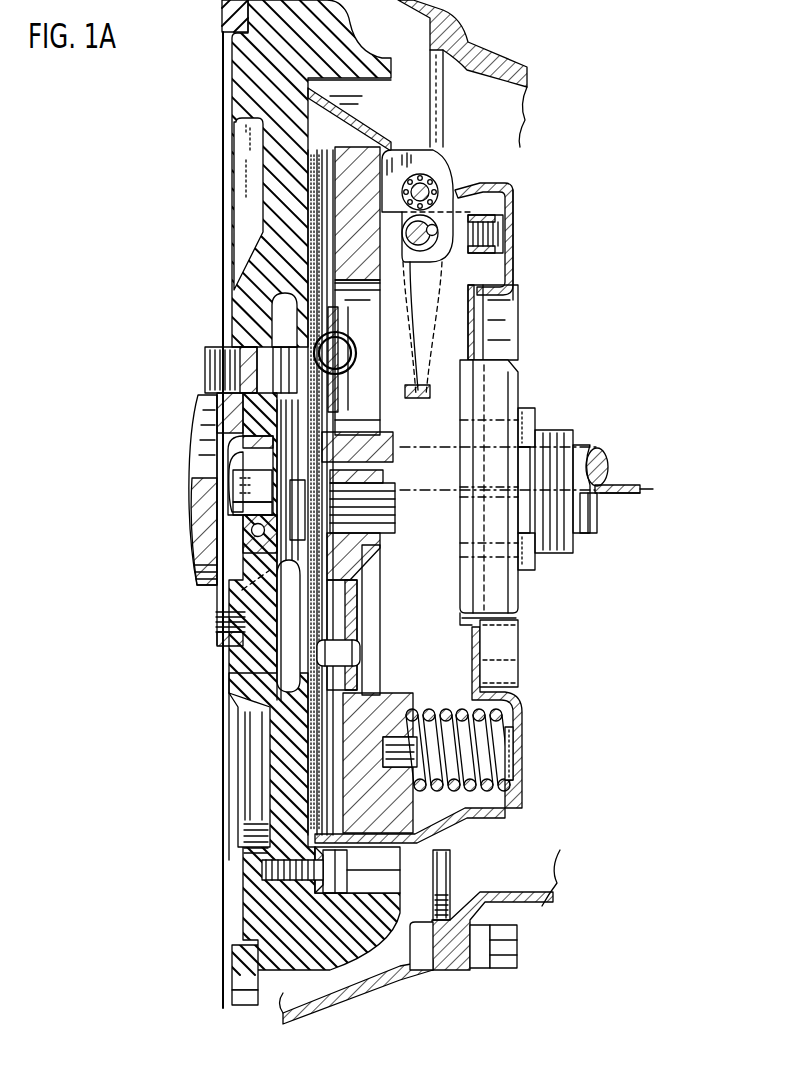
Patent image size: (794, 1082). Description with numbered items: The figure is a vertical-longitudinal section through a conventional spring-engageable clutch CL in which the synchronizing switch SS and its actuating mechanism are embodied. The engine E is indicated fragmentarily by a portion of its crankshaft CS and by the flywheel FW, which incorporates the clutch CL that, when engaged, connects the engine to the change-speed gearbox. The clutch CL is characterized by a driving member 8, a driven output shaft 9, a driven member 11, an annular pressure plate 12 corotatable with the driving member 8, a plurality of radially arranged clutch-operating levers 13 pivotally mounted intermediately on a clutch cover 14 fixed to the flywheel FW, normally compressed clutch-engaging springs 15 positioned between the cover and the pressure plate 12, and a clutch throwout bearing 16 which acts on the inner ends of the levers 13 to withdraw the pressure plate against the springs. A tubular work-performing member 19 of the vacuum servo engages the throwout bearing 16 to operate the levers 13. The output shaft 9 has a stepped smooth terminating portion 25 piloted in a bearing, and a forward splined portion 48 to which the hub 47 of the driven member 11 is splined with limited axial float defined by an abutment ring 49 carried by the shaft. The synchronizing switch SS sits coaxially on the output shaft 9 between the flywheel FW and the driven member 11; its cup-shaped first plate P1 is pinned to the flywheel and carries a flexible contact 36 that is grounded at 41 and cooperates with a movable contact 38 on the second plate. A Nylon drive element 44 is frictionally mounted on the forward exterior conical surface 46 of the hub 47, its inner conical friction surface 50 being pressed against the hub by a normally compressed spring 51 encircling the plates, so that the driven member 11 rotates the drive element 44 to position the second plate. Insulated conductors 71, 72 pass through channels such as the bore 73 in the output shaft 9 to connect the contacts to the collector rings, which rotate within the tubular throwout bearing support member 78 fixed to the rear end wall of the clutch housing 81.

The engine E is at (212, 236).
The flywheel FW is at (215, 893).
The crankshaft CS is at (184, 565).
The synchronizing switch SS is at (213, 381).
The first plate P1 is at (250, 438).
The clutch CL is at (476, 832).
The driving member 8 is at (278, 965).
The driven output shaft 9 is at (598, 440).
The driven member 11 is at (368, 619).
The pressure plate 12 is at (440, 157).
The clutch-operating levers 13 is at (448, 207).
The clutch cover 14 is at (523, 790).
The clutch-engaging springs 15 is at (446, 712).
The clutch throwout bearing 16 is at (493, 358).
The tubular work-performing member 19 is at (540, 427).
The stepped smooth terminating portion 25 is at (233, 477).
The fixed flexible contact 36 is at (243, 522).
The movable contact 38 is at (252, 474).
The ground 41 is at (260, 485).
The drive element 44 is at (295, 540).
The exterior conical surface 46 is at (318, 437).
The hub 47 is at (367, 556).
The splined portion 48 is at (378, 473).
The abutment ring 49 is at (380, 540).
The conical friction surface 50 is at (242, 590).
The spring 51 is at (292, 537).
The insulated conductor 71 is at (618, 494).
The insulated conductor 72 is at (648, 488).
The channel 73 is at (592, 535).
The throwout bearing support member 78 is at (560, 428).
The clutch housing 81 is at (533, 907).